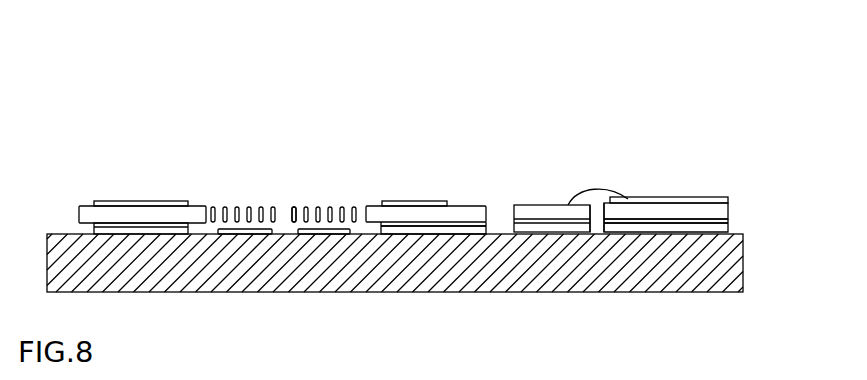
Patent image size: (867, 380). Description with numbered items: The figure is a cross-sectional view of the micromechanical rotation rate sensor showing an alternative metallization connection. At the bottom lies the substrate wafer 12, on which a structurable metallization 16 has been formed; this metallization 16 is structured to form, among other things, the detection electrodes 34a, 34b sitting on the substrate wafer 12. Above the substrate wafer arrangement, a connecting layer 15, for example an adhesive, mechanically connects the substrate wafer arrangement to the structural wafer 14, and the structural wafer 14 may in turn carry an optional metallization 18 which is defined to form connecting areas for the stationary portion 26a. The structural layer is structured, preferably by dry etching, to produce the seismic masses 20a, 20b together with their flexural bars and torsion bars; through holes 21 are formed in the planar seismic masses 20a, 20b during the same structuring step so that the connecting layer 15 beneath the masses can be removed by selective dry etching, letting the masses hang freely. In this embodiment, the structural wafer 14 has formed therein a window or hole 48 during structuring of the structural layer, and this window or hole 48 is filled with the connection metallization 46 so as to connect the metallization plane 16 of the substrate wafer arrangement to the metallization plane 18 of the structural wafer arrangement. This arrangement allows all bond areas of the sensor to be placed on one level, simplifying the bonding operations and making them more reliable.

The substrate wafer 12 is at (593, 275).
The structural wafer 14 is at (407, 213).
The connecting layer 15 is at (532, 223).
The metallization 16 is at (730, 227).
The metallization 18 is at (142, 203).
The seismic mass 20a is at (347, 207).
The seismic mass 20b is at (225, 207).
The through holes 21 is at (302, 207).
The stationary portion 26a is at (171, 168).
The detection electrode 34a is at (233, 235).
The detection electrode 34b is at (308, 235).
The connection metallization 46 is at (582, 192).
The window or hole 48 is at (600, 200).